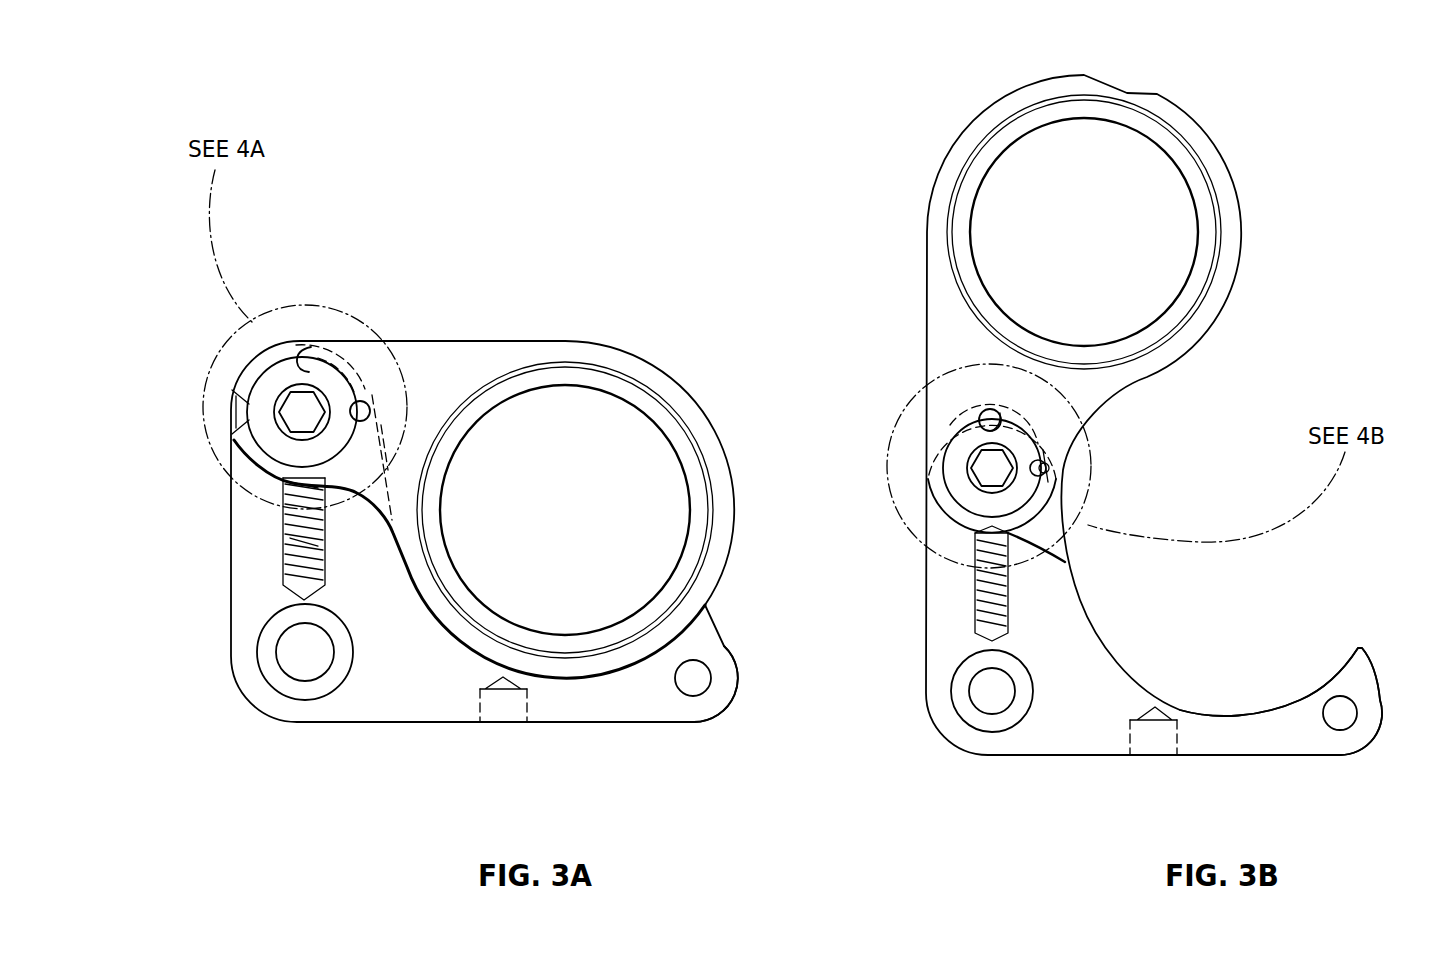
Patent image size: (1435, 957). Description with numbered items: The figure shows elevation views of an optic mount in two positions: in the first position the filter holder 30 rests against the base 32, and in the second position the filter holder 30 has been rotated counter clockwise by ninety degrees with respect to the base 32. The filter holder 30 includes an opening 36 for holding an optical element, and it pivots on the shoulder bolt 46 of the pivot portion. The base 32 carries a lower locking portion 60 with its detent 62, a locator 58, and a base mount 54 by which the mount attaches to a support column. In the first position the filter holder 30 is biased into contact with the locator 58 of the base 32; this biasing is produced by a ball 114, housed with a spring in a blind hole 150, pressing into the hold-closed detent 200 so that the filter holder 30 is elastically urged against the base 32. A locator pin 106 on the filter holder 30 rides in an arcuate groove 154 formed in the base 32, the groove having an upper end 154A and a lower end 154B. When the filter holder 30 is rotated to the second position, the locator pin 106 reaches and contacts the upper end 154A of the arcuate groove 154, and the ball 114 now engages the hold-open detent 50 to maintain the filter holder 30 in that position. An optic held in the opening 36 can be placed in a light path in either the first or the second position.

In FIG. 3A, the filter holder 30 is at (610, 323).
In FIG. 3B, the filter holder 30 is at (1235, 143).
In FIG. 3A, the base 32 is at (752, 688).
In FIG. 3B, the base 32 is at (1360, 603).
In FIG. 3A, the opening 36 is at (645, 505).
In FIG. 3B, the opening 36 is at (1025, 203).
In FIG. 3A, the shoulder bolt 46 is at (270, 385).
In FIG. 3B, the shoulder bolt 46 is at (953, 460).
In FIG. 3A, the hold-open detent 50 is at (242, 420).
In FIG. 3B, the hold-open detent 50 is at (965, 522).
In FIG. 3A, the base mount 54 is at (523, 723).
In FIG. 3B, the base mount 54 is at (1150, 757).
In FIG. 3A, the locator 58 is at (580, 682).
In FIG. 3B, the locator 58 is at (1217, 713).
In FIG. 3A, the lower locking portion 60 is at (300, 658).
In FIG. 3B, the lower locking portion 60 is at (975, 692).
In FIG. 3A, the detent 62 is at (698, 693).
In FIG. 3B, the detent 62 is at (1347, 727).
In FIG. 3A, the locator pin 106 is at (362, 402).
In FIG. 3B, the locator pin 106 is at (986, 412).
In FIG. 3A, the ball 114 is at (280, 500).
In FIG. 3B, the ball 114 is at (960, 548).
In FIG. 3A, the blind hole 150 is at (283, 548).
In FIG. 3B, the blind hole 150 is at (973, 578).
In FIG. 3A, the arcuate groove 154 is at (346, 355).
In FIG. 3B, the arcuate groove 154 is at (1048, 409).
In FIG. 3A, the upper end 154A is at (298, 345).
In FIG. 3B, the upper end 154A is at (985, 413).
In FIG. 3A, the lower end 154B is at (368, 395).
In FIG. 3B, the lower end 154B is at (1062, 478).
In FIG. 3A, the hold-closed detent 200 is at (246, 440).
In FIG. 3B, the hold-closed detent 200 is at (1057, 467).